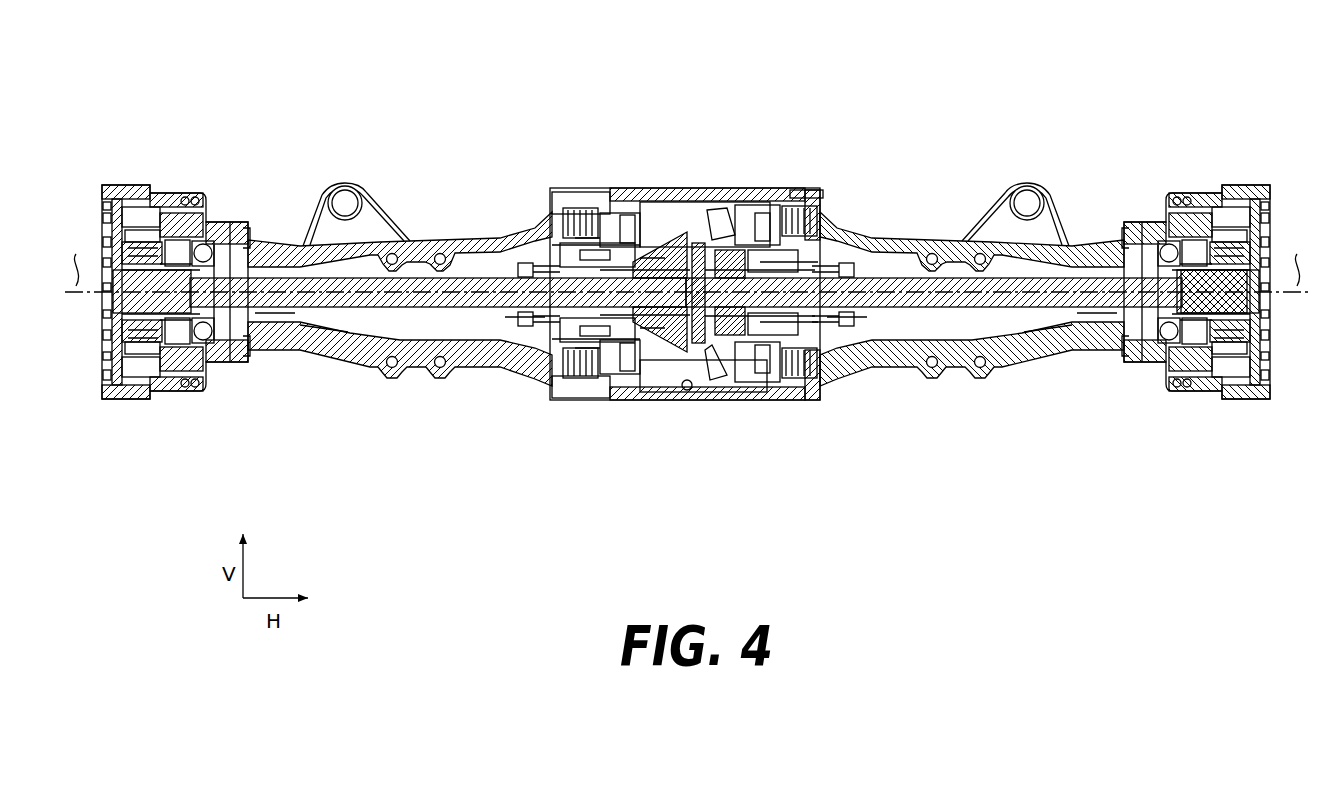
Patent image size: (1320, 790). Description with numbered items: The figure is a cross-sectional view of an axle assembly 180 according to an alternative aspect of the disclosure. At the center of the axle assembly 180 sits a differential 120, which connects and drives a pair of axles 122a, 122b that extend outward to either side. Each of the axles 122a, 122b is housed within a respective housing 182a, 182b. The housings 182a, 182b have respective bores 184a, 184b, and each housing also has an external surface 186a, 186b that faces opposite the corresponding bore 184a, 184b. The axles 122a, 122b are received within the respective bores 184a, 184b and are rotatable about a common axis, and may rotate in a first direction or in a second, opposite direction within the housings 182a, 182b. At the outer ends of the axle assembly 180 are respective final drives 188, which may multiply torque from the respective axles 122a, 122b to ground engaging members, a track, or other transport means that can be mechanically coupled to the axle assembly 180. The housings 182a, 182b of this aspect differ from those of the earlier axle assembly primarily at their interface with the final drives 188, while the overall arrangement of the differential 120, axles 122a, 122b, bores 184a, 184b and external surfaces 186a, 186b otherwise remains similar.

The axle assembly 180 is at (782, 78).
The final drive 188 is at (204, 171).
The external surface 186a is at (473, 232).
The external surface 186b is at (925, 238).
The housing 182a is at (457, 366).
The housing 182b is at (913, 368).
The bore 184a is at (513, 270).
The bore 184b is at (862, 270).
The axle 122a is at (490, 306).
The axle 122b is at (877, 306).
The differential 120 is at (687, 188).